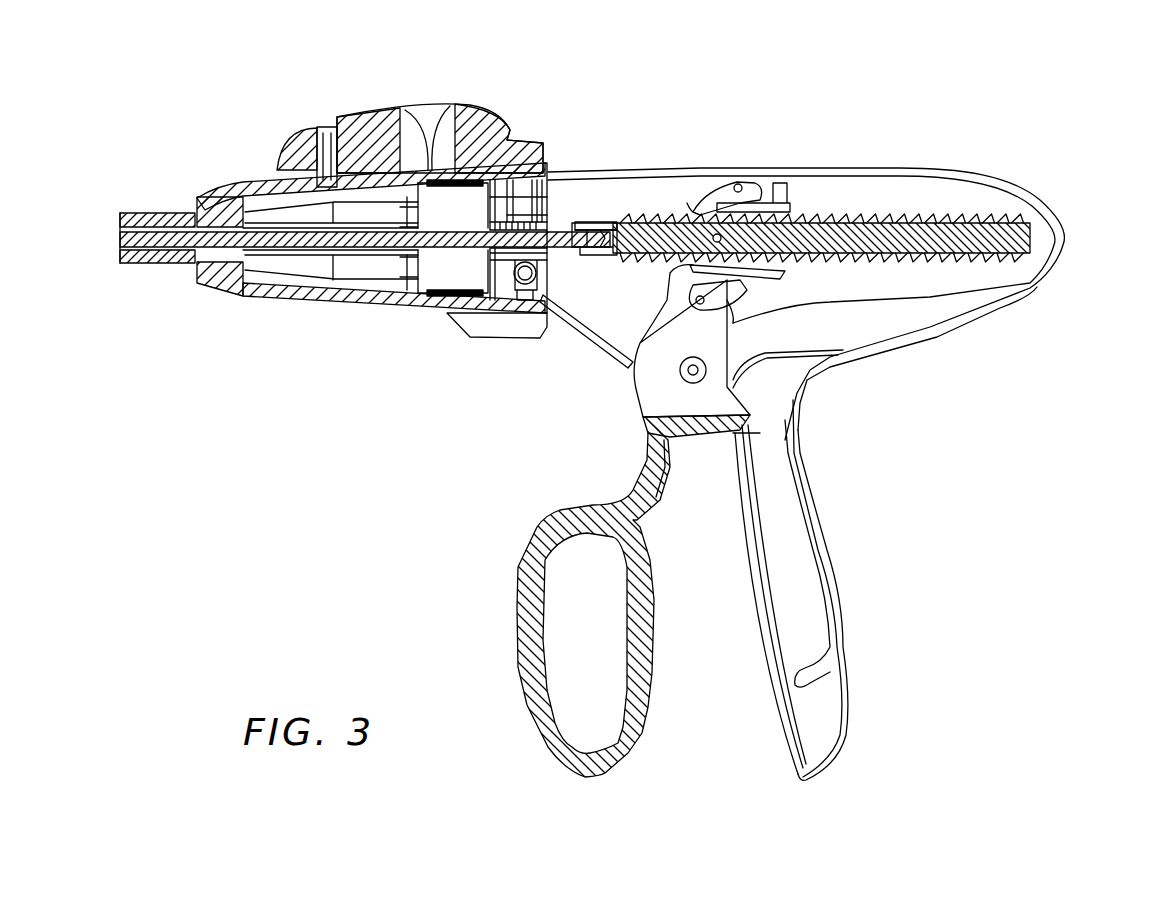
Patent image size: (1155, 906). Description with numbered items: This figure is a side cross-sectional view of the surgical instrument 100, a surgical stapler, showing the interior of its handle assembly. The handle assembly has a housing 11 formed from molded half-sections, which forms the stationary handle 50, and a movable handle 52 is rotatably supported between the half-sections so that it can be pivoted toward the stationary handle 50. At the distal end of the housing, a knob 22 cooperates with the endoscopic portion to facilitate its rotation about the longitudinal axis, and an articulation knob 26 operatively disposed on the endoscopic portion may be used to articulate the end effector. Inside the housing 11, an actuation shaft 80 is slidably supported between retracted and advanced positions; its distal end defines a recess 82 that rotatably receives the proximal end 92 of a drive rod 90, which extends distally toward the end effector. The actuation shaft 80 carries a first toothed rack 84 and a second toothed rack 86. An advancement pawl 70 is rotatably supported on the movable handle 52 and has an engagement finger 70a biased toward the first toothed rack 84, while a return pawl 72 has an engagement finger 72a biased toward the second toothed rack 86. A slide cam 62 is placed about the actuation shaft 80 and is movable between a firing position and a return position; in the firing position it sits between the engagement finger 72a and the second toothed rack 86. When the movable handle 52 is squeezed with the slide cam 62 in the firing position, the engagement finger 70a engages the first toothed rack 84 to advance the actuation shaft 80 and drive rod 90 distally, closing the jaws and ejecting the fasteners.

The surgical instrument 100 is at (388, 490).
The housing 11 is at (893, 172).
The knob 22 is at (487, 330).
The articulation knob 26 is at (367, 128).
The stationary handle 50 is at (807, 575).
The movable handle 52 is at (525, 685).
The slide cam 62 is at (787, 205).
The advancement pawl 70 is at (735, 182).
The engagement finger 70a is at (697, 208).
The return pawl 72 is at (637, 353).
The engagement finger 72a is at (740, 272).
The actuation shaft 80 is at (1015, 238).
The recess 82 is at (608, 254).
The first toothed rack 84 is at (978, 215).
The second toothed rack 86 is at (1003, 257).
The drive rod 90 is at (285, 240).
The proximal end 92 is at (613, 215).